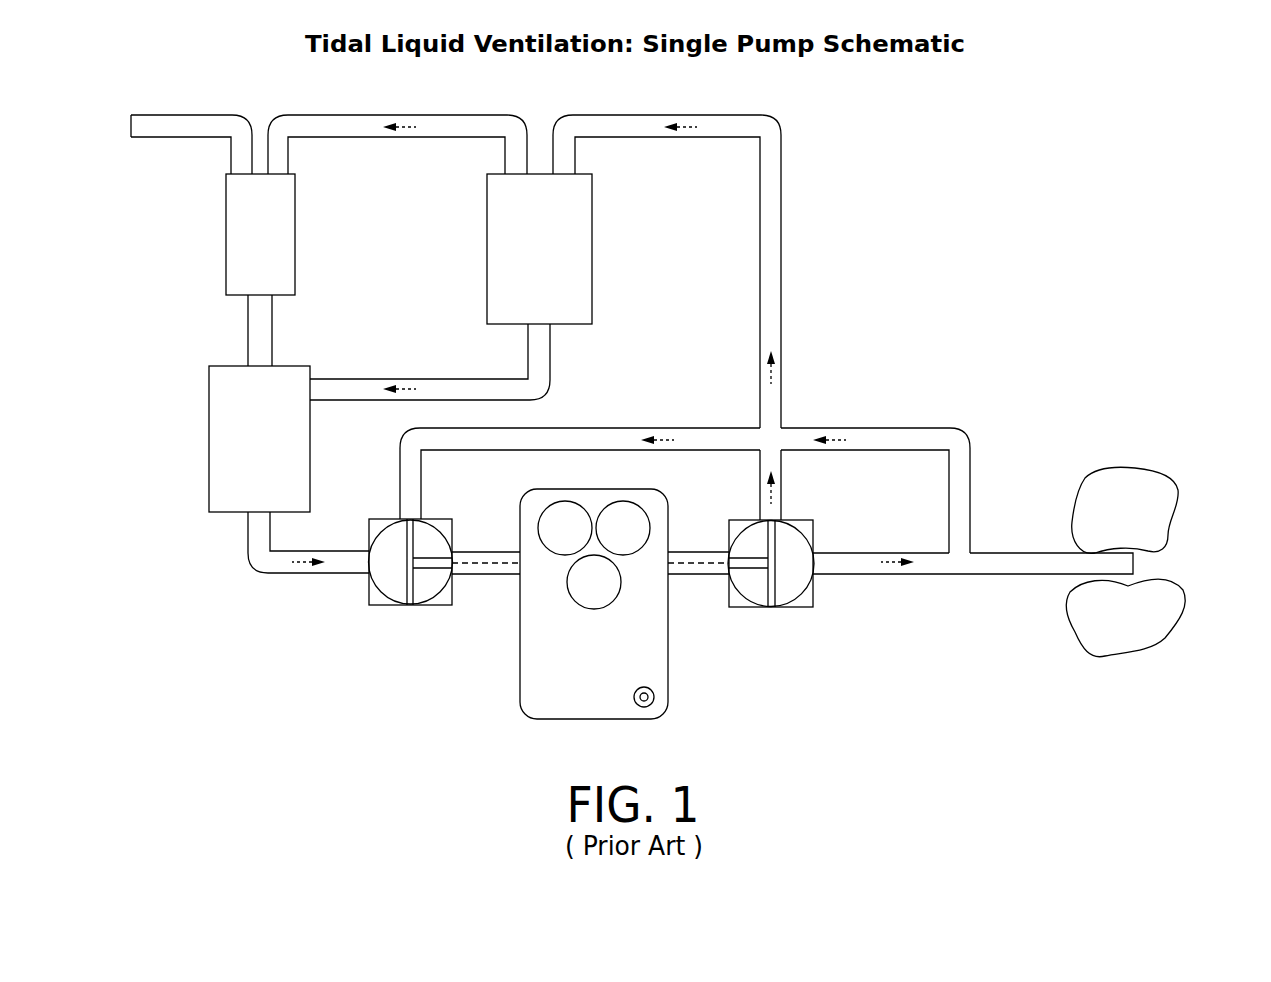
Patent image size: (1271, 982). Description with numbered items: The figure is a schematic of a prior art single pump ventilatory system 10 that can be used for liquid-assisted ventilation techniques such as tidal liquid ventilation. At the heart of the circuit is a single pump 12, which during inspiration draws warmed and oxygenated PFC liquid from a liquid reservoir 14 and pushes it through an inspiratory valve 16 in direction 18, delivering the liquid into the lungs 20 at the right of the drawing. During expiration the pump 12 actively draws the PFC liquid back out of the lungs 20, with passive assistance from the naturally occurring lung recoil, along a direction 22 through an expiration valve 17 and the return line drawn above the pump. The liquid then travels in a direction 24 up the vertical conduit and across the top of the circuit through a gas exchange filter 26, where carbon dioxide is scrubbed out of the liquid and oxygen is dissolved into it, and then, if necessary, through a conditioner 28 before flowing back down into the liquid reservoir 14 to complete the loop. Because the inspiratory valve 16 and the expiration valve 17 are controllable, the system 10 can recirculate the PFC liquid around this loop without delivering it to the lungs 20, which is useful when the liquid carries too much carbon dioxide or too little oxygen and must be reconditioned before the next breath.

The single pump ventilatory system 10 is at (816, 193).
The pump 12 is at (581, 668).
The liquid reservoir 14 is at (248, 450).
The inspiratory valve 16 is at (378, 606).
The expiration valve 17 is at (808, 607).
The direction of inspiratory flow 18 is at (690, 449).
The lungs 20 is at (1115, 521).
The direction of expiratory flow 22 is at (685, 490).
The direction of return flow 24 is at (675, 317).
The gas exchange filter 26 is at (528, 260).
The conditioner 28 is at (249, 248).